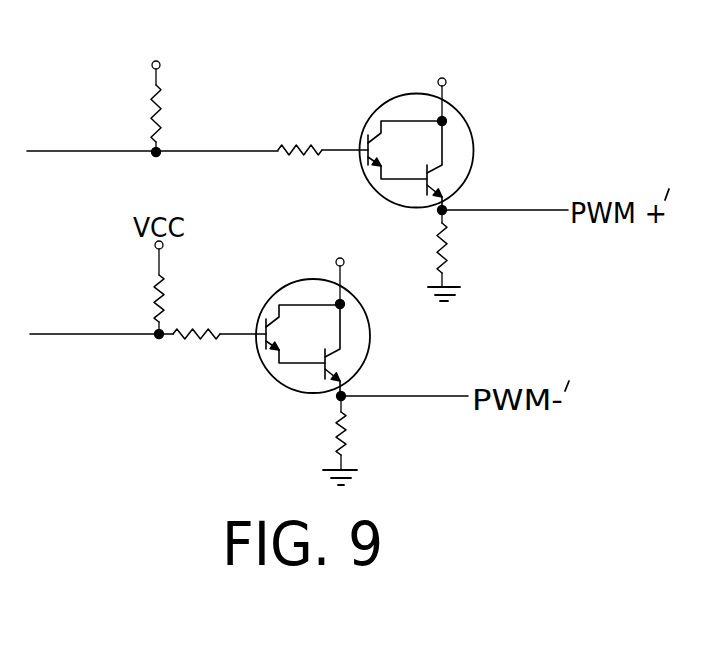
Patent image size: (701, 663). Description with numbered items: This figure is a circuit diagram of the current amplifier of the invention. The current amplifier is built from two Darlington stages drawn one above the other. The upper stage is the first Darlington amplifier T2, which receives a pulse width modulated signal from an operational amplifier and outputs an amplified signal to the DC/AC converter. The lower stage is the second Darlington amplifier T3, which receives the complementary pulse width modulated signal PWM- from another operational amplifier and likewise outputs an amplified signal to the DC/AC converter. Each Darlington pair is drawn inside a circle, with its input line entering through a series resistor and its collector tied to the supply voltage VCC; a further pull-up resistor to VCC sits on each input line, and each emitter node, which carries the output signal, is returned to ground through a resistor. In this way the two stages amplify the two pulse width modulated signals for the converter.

The first Darlington amplifier T2 is at (438, 129).
The second Darlington amplifier T3 is at (331, 313).
The supply voltage terminal with pull-up resistor VCC is at (165, 92).
The pulse width modulated signal PWM- is at (148, 350).